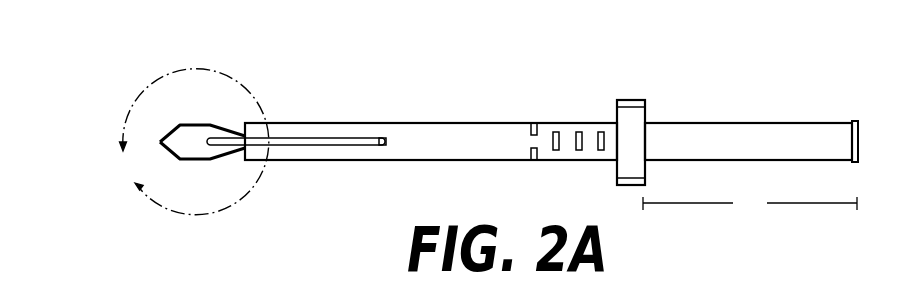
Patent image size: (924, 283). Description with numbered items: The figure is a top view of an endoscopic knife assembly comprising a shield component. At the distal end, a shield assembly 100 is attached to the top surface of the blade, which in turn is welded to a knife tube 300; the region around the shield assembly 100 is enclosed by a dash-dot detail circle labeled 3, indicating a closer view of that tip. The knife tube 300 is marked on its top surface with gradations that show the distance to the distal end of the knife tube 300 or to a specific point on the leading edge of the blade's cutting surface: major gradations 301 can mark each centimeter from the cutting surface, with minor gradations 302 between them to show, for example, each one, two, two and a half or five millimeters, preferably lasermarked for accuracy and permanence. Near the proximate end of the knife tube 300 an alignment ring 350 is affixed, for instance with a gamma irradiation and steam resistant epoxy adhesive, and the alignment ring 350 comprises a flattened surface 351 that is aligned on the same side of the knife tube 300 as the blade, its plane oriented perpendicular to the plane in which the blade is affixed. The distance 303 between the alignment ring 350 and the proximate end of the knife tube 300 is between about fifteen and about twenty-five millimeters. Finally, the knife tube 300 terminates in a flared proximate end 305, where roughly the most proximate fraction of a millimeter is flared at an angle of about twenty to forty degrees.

The detail view circle (FIG. 3) 3 is at (194, 142).
The shield assembly 100 is at (188, 135).
The knife tube 300 is at (423, 135).
The major gradations 301 is at (533, 122).
The minor gradations 302 is at (555, 132).
The distance 303 is at (750, 203).
The flared proximate end 305 is at (858, 140).
The alignment ring 350 is at (647, 118).
The flattened surface 351 is at (628, 120).